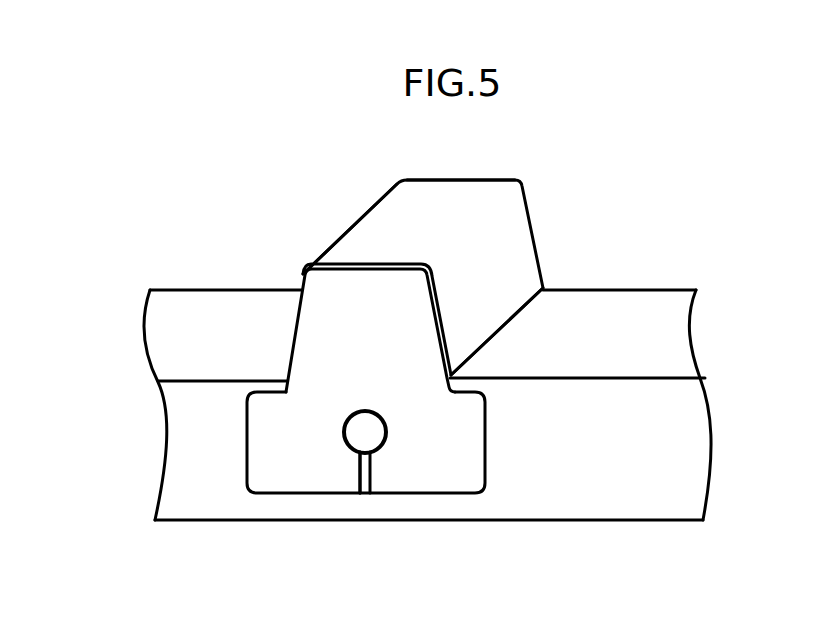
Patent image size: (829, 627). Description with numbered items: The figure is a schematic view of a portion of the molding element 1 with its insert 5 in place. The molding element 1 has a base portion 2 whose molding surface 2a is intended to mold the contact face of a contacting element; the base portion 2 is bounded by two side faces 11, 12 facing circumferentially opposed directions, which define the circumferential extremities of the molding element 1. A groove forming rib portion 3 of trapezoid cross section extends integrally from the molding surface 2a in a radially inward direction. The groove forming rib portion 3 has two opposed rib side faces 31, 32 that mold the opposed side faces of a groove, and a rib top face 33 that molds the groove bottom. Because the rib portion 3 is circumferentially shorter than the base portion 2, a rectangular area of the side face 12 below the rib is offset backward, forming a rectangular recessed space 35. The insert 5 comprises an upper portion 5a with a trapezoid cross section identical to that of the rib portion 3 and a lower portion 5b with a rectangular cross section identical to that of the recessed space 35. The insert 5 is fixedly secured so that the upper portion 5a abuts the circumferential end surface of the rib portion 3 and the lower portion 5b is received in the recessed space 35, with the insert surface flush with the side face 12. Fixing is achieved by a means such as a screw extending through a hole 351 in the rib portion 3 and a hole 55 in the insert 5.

The molding element 1 is at (595, 160).
The base portion 2 is at (628, 280).
The molding surface 2a is at (202, 333).
The side face 11 is at (697, 290).
The side face 12 is at (577, 478).
The groove forming rib portion 3 is at (318, 238).
The rib side face 31 is at (388, 187).
The rib side face 32 is at (510, 268).
The rib top face 33 is at (455, 198).
The rectangular recessed space 35 is at (368, 494).
The hole 351 is at (368, 440).
The insert 5 is at (84, 340).
The upper portion 5a is at (312, 343).
The lower portion 5b is at (268, 420).
The hole 55 is at (358, 425).